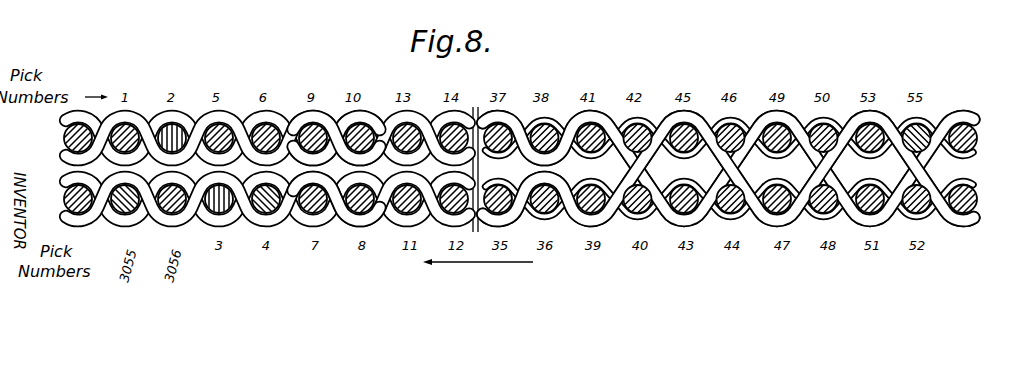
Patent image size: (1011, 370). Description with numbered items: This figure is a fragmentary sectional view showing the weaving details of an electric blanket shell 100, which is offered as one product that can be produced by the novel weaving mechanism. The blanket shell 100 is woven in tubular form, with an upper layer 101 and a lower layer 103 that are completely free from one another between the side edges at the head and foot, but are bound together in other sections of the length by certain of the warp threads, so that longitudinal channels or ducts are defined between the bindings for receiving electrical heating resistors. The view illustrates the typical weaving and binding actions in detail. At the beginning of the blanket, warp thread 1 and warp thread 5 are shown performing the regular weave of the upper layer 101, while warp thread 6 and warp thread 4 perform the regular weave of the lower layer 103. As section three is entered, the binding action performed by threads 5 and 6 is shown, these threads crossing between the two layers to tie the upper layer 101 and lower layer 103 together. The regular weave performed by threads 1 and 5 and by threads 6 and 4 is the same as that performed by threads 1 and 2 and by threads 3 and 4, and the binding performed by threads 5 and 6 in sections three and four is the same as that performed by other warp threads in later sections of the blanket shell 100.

The warp thread 1 is at (66, 117).
The warp thread 2 is at (66, 160).
The warp thread 3 is at (66, 180).
The warp thread 4 is at (66, 225).
The binding warp thread 5 is at (97, 141).
The binding warp thread 6 is at (92, 198).
The blanket shell 100 is at (609, 95).
The upper layer 101 is at (331, 103).
The lower layer 103 is at (341, 237).